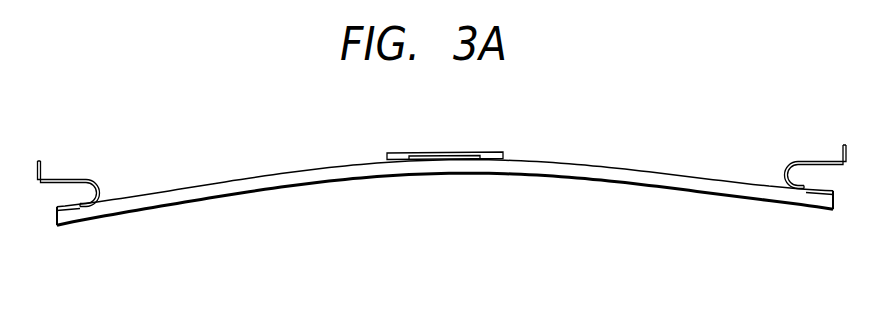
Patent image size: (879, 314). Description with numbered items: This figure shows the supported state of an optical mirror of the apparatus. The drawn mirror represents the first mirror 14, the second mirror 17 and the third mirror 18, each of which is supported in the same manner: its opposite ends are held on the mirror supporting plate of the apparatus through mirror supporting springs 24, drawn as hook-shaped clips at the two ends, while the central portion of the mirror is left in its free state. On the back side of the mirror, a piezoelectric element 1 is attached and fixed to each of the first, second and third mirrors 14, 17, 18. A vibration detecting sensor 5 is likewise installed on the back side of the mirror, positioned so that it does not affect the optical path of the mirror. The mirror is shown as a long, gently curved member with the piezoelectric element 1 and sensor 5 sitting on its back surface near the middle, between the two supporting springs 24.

The piezoelectric element 1 is at (400, 153).
The vibration detecting sensor 5 is at (471, 156).
The first mirror 14 is at (445, 214).
The second mirror 17 is at (445, 214).
The third mirror 18 is at (172, 203).
The mirror supporting spring 24 is at (79, 179).